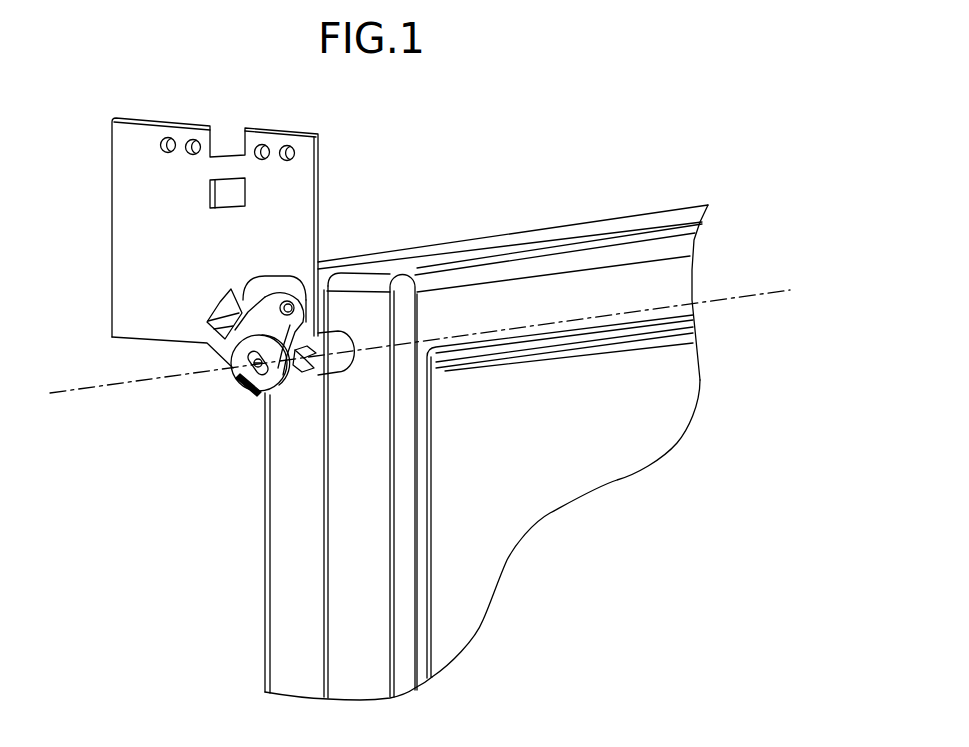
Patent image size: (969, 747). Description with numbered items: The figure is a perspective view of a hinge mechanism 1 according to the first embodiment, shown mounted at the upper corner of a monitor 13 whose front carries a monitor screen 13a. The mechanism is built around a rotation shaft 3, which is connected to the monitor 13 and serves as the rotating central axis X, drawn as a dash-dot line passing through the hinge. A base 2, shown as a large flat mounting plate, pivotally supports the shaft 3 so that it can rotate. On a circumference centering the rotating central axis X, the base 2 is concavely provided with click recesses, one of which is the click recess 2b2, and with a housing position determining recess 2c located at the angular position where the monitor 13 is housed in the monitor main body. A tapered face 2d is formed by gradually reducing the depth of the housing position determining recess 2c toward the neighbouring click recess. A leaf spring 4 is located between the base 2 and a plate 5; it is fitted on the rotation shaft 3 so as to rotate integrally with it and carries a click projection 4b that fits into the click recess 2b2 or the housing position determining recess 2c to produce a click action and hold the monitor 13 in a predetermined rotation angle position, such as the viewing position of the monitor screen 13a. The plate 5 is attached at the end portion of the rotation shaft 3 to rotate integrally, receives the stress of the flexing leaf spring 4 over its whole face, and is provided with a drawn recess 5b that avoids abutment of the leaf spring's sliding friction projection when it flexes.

The hinge mechanism 1 is at (284, 404).
The base 2 is at (138, 213).
The click recess 2b2 is at (307, 317).
The housing position determining recess 2c is at (205, 321).
The tapered face 2d is at (227, 302).
The rotation shaft 3 is at (347, 340).
The leaf spring 4 is at (237, 349).
The click projection 4b is at (289, 301).
The plate 5 is at (258, 405).
The drawn recess 5b is at (243, 388).
The monitor 13 is at (290, 597).
The monitor screen 13a is at (557, 488).
The rotating central axis X is at (71, 393).